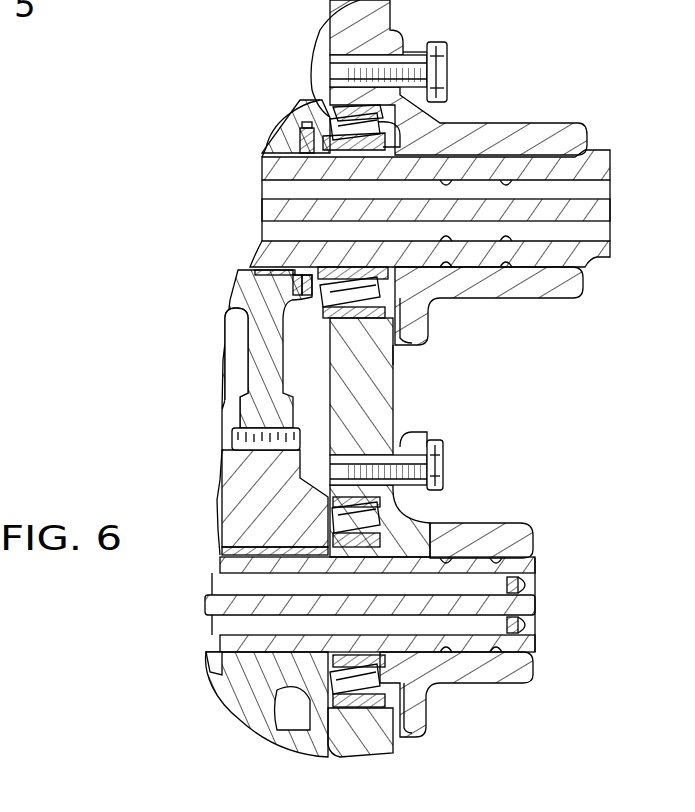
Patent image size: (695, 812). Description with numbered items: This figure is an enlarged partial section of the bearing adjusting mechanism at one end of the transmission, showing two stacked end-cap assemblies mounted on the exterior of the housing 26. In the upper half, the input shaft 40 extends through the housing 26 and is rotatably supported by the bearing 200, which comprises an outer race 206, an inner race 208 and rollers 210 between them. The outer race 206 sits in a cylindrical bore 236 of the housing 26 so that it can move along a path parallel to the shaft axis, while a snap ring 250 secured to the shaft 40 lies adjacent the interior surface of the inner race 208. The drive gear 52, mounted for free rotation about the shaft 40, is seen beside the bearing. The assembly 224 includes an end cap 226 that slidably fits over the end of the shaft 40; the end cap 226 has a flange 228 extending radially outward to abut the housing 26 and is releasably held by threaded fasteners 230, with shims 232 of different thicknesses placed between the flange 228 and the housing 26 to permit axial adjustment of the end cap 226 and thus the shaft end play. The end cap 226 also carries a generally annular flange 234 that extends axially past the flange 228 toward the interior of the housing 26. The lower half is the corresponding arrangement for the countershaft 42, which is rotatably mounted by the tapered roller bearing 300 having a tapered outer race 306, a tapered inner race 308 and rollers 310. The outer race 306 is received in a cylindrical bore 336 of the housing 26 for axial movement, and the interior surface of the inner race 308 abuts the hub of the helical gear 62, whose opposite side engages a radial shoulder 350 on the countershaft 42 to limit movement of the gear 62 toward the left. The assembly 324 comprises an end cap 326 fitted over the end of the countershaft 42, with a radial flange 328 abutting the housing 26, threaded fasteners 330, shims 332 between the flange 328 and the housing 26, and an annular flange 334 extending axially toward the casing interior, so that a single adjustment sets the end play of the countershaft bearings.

The assembly 224 is at (557, 112).
The shims 232 is at (397, 30).
The threaded fasteners 230 is at (440, 45).
The outer race 206 is at (340, 117).
The rollers 210 is at (330, 128).
The inner race 208 is at (310, 130).
The snap ring 250 is at (313, 158).
The input shaft 40 is at (273, 212).
The end cap 226 is at (531, 303).
The flange 228 is at (416, 333).
The drive gear 52 is at (240, 291).
The cylindrical bore 236 is at (328, 312).
The bearing 200 is at (322, 322).
The annular flange 234 is at (395, 350).
The housing 26 is at (378, 401).
The shims 332 is at (405, 432).
The threaded fasteners 330 is at (438, 449).
The assembly 324 is at (502, 507).
The bearing 300 is at (393, 505).
The tapered outer race 306 is at (326, 503).
The rollers 310 is at (328, 522).
The tapered inner race 308 is at (377, 576).
The countershaft 42 is at (220, 598).
The radial shoulder 350 is at (240, 692).
The helical gear 62 is at (262, 720).
The cylindrical bore 336 is at (355, 725).
The annular flange 334 is at (383, 722).
The radial flange 328 is at (416, 727).
The end cap 326 is at (485, 683).